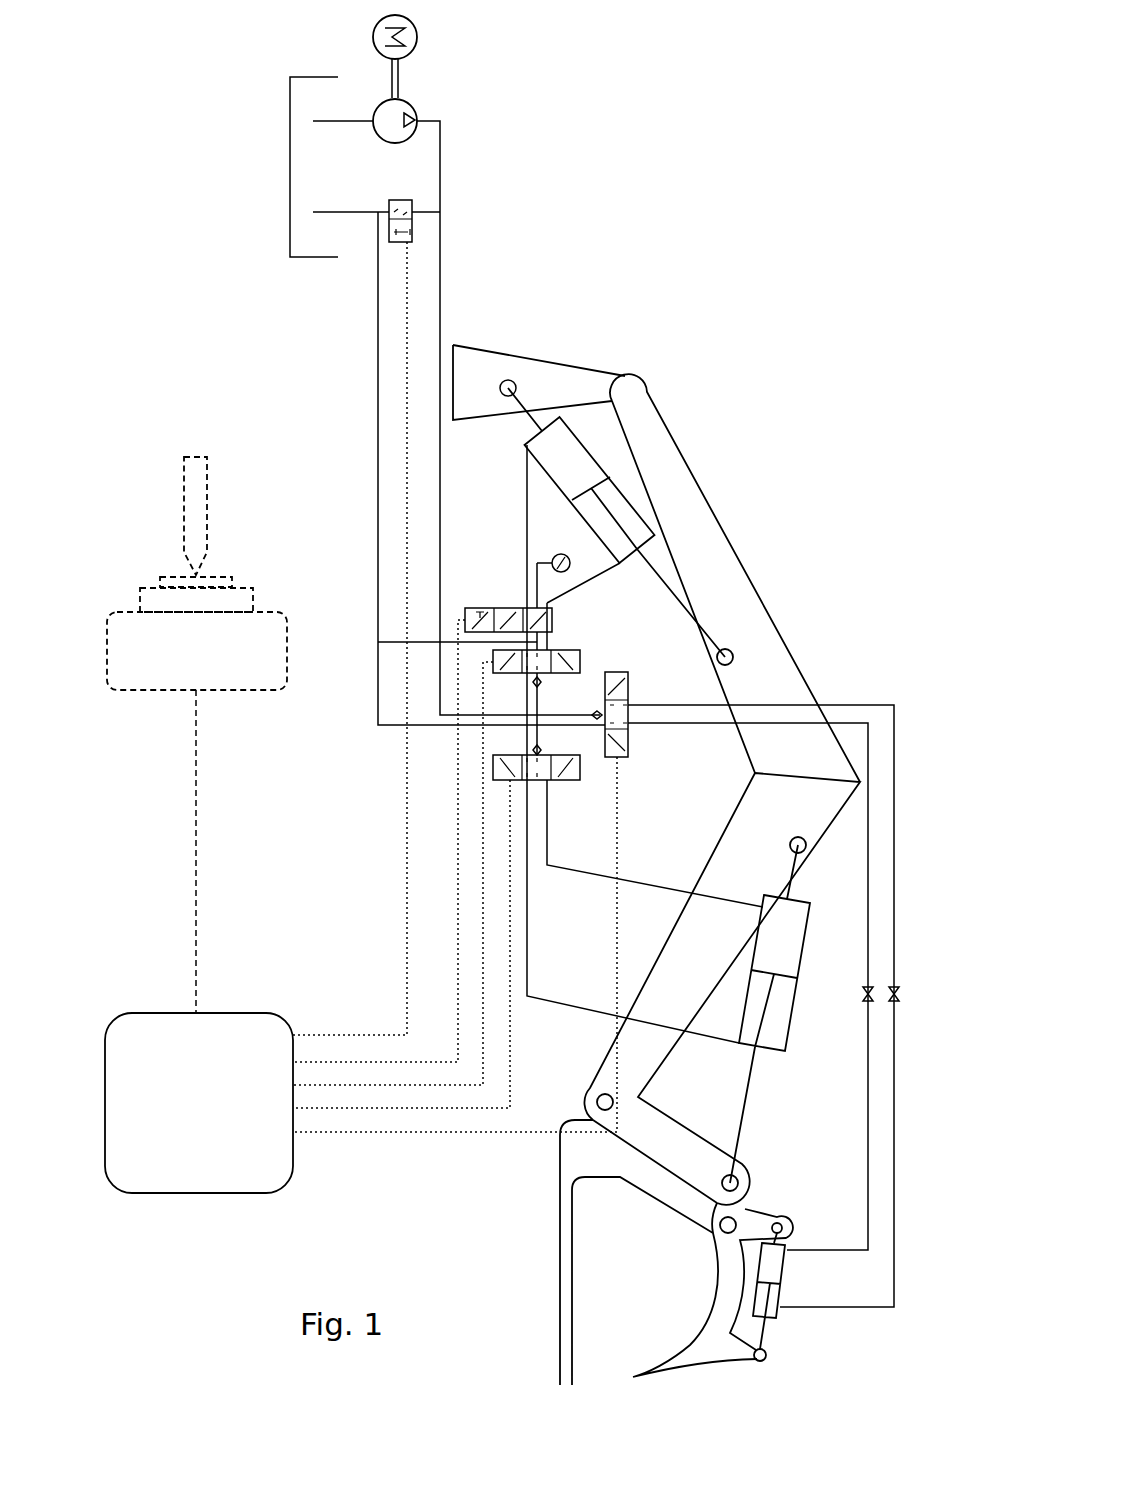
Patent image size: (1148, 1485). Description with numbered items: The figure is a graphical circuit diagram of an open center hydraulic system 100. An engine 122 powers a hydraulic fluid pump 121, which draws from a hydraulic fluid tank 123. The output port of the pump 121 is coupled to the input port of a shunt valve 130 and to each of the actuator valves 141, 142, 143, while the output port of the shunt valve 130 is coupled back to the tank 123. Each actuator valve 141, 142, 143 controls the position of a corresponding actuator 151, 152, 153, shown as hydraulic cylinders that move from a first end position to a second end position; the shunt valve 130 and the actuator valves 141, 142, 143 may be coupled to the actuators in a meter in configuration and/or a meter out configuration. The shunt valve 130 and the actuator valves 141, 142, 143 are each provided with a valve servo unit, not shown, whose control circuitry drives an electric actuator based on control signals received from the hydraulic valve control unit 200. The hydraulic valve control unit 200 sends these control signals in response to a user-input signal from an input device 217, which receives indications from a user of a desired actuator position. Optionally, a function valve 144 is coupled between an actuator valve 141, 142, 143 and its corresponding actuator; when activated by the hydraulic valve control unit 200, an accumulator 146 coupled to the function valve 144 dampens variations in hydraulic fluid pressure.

The open center hydraulic system 100 is at (787, 173).
The hydraulic fluid pump 121 is at (416, 134).
The engine 122 is at (370, 42).
The hydraulic fluid tank 123 is at (287, 229).
The shunt valve 130 is at (402, 246).
The actuator valve 141 is at (585, 660).
The actuator valve 142 is at (572, 785).
The actuator valve 143 is at (632, 737).
The function valve 144 is at (495, 605).
The accumulator 146 is at (565, 548).
The actuator 151 is at (624, 508).
The actuator 152 is at (773, 1046).
The actuator 153 is at (775, 1307).
The hydraulic valve control unit 200 is at (199, 1103).
The input device 217 is at (197, 573).